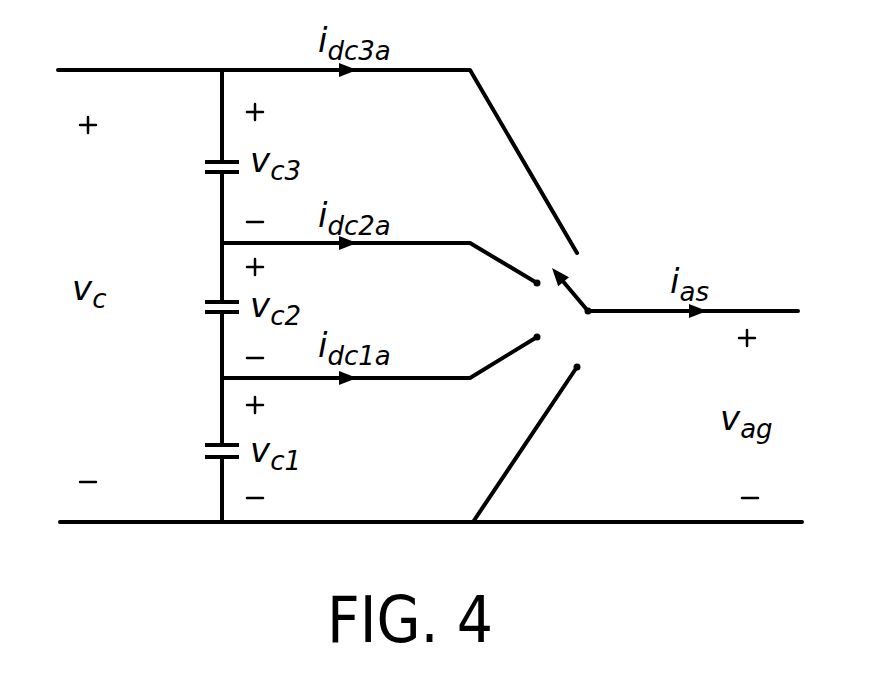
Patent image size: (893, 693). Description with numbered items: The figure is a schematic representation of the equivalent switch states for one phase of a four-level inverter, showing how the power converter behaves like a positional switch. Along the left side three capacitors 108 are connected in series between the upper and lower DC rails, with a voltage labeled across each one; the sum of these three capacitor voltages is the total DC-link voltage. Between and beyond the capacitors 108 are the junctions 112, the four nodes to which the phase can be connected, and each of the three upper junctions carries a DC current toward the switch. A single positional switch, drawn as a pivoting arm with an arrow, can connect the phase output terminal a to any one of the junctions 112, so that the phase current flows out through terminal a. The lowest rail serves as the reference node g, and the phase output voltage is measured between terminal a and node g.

The capacitor 108 is at (207, 169).
The junction 112 is at (143, 105).
The phase output terminal a is at (703, 321).
The ground / negative rail terminal g is at (445, 516).